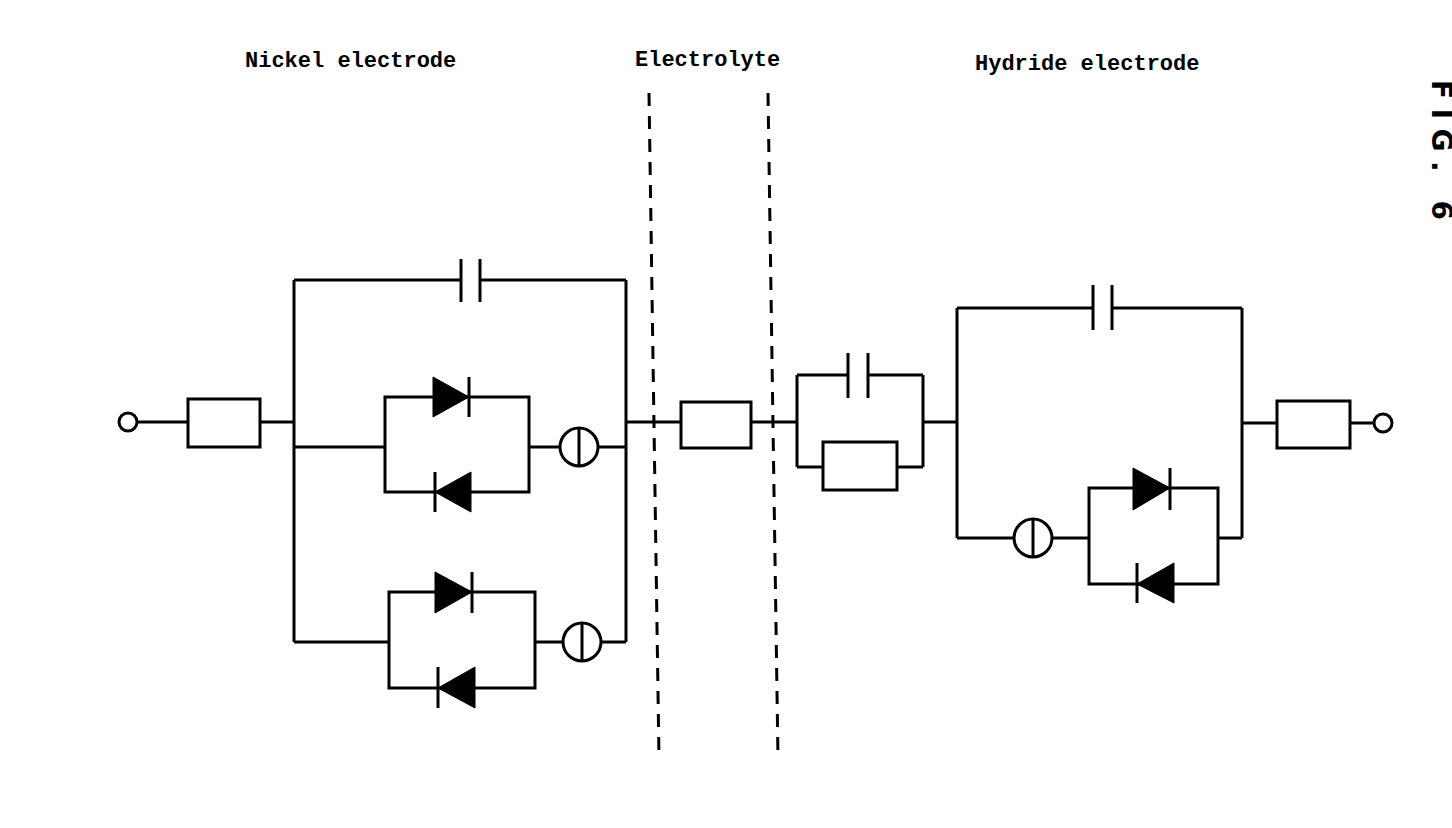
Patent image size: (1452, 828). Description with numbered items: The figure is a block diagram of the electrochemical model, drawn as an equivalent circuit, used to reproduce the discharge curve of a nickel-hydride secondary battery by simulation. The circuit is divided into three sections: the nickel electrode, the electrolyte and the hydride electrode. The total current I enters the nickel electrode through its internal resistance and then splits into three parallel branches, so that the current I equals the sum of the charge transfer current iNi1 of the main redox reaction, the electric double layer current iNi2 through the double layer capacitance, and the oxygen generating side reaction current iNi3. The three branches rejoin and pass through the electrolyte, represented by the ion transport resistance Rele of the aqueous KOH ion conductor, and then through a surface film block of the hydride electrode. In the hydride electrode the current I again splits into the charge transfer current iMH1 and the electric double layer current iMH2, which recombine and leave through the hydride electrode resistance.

The current I is at (175, 444).
The charge transfer current of the nickel electrode iNi1 is at (340, 438).
The electric double layer current of the nickel electrode iNi2 is at (297, 289).
The oxygen generating reaction current iNi3 is at (347, 633).
The ion transport resistance of the electrolyte Rele is at (716, 409).
The charge transfer current of the hydride electrode iMH1 is at (1002, 562).
The electric double layer current of the hydride electrode iMH2 is at (1012, 331).